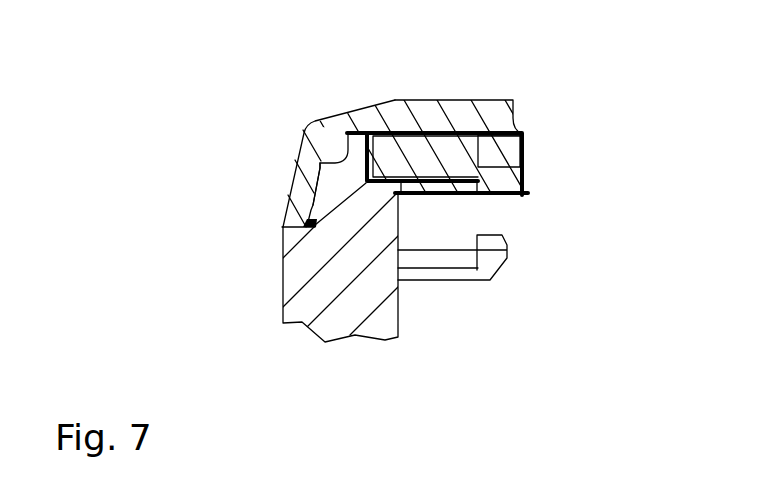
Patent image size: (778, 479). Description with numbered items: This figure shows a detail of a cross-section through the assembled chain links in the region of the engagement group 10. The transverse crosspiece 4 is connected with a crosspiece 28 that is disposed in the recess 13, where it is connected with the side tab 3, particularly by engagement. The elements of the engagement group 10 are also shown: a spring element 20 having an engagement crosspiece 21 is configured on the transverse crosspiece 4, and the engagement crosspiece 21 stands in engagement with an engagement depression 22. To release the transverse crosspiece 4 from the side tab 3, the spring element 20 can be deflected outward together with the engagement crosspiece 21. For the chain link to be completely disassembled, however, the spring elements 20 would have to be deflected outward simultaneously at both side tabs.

The engagement group 10 is at (281, 101).
The spring element 20 is at (299, 171).
The engagement crosspiece 21 is at (303, 226).
The engagement depression 22 is at (313, 206).
The transverse crosspiece 4 is at (474, 106).
The crosspiece 28 is at (454, 155).
The recess 13 is at (481, 190).
The side tab 3 is at (341, 309).